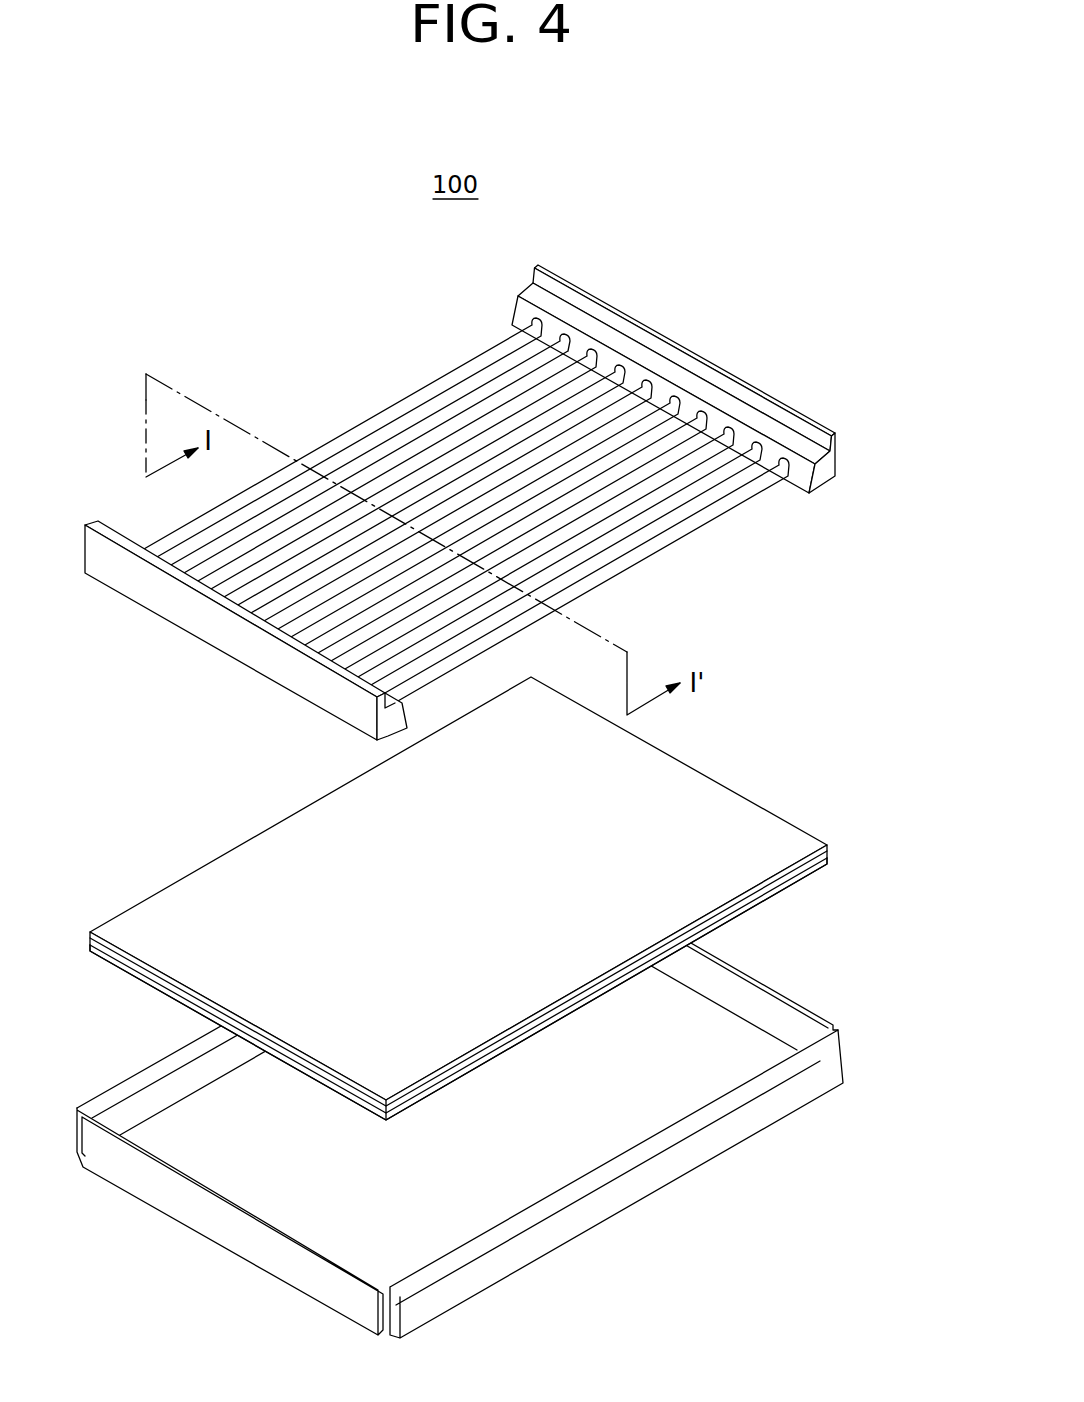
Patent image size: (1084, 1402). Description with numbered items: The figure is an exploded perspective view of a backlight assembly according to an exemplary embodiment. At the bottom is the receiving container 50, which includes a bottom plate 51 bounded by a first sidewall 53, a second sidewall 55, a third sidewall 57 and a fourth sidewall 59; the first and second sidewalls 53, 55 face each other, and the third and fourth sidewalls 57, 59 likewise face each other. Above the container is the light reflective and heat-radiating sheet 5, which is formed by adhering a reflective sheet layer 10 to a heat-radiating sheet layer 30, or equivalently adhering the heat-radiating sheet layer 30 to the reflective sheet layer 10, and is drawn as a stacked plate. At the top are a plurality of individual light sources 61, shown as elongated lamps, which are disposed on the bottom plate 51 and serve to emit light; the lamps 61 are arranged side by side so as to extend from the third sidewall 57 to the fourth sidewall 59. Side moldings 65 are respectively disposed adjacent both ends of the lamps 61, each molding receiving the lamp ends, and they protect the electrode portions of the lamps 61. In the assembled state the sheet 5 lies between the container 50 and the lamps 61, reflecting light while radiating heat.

The light sources 61 is at (463, 368).
The side moldings 65 is at (702, 352).
The reflective sheet layer 10 is at (828, 847).
The heat-radiating sheet layer 30 is at (828, 860).
The light reflective and heat-radiating sheet 5 is at (517, 898).
The receiving container 50 is at (499, 1094).
The bottom plate 51 is at (465, 1165).
The first sidewall 53 is at (122, 1088).
The second sidewall 55 is at (618, 1200).
The third sidewall 57 is at (200, 1222).
The fourth sidewall 59 is at (785, 992).